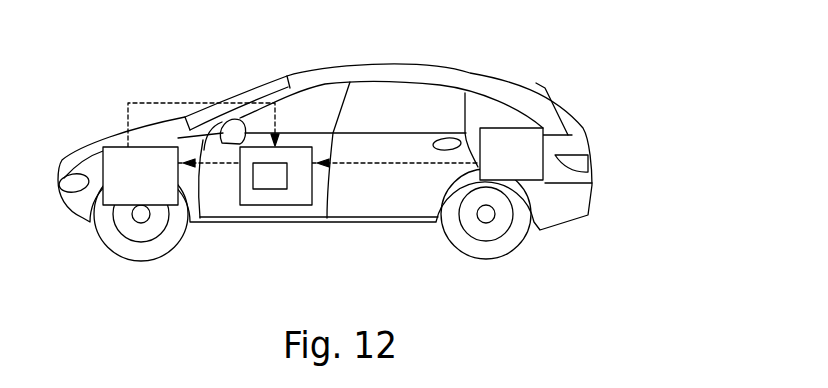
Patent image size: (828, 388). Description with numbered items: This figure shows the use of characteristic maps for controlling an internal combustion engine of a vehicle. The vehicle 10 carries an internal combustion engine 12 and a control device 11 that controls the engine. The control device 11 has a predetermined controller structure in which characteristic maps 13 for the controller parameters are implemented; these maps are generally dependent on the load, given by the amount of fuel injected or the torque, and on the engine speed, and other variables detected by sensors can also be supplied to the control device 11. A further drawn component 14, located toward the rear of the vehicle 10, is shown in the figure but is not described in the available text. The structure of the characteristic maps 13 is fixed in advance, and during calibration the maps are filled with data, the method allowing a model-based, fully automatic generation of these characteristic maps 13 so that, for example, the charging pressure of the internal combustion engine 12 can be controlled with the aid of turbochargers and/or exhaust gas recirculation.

The vehicle 10 is at (571, 94).
The control device 11 is at (298, 180).
The internal combustion engine 12 is at (152, 177).
The characteristic map 13 is at (272, 175).
The battery 14 is at (510, 152).